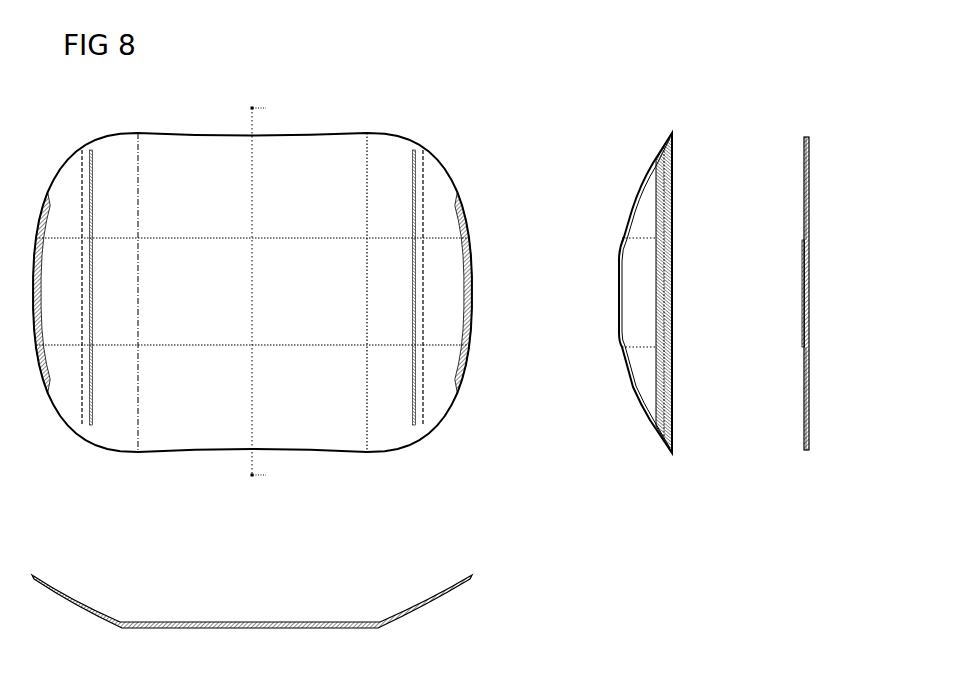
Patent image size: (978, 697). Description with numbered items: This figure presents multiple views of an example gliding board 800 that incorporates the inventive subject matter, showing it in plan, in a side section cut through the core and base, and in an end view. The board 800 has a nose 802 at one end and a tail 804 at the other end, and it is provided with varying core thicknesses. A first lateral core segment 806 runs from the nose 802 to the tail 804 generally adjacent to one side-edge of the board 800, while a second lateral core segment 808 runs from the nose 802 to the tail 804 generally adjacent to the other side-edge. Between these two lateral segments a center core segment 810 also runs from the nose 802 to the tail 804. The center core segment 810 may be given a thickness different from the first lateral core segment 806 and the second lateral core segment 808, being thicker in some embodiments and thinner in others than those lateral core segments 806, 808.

The board 800 is at (415, 82).
The nose 802 is at (45, 402).
The tail 804 is at (466, 205).
The first lateral core segment 806 is at (290, 164).
The second lateral core segment 808 is at (312, 410).
The center core segment 810 is at (398, 325).